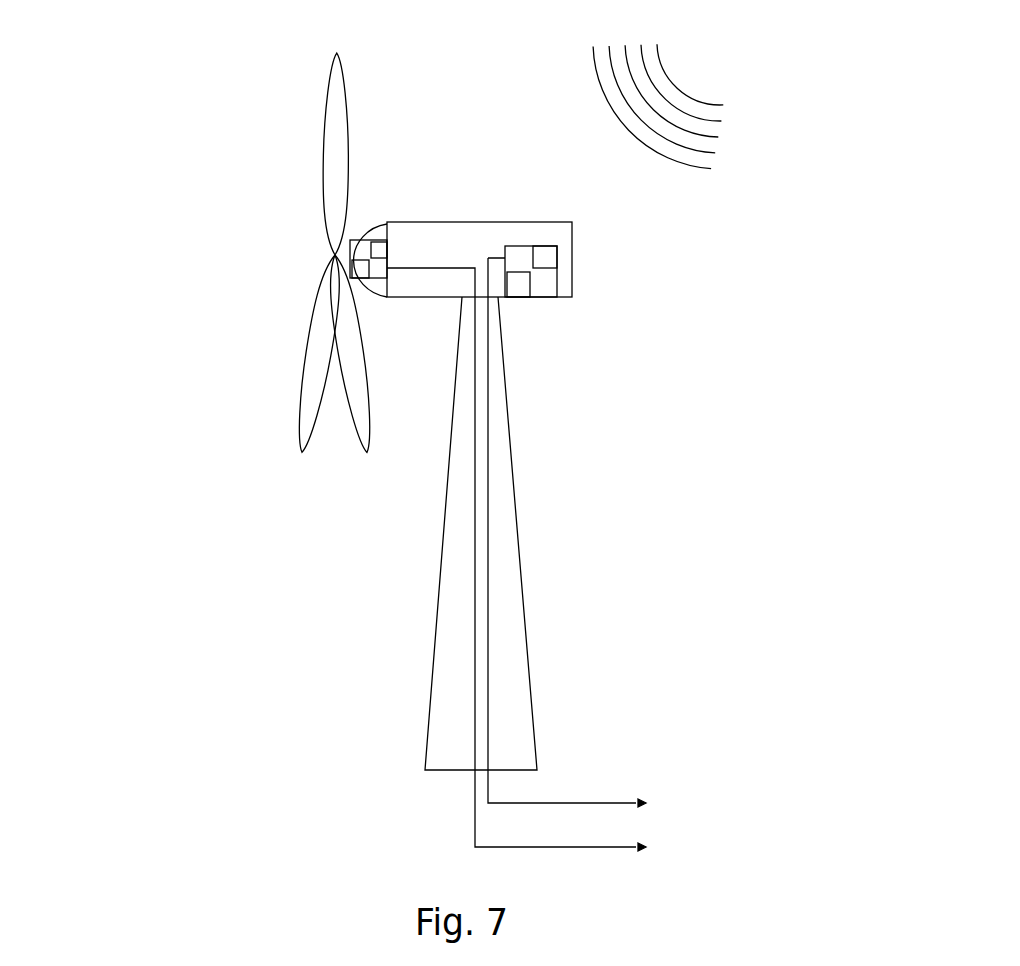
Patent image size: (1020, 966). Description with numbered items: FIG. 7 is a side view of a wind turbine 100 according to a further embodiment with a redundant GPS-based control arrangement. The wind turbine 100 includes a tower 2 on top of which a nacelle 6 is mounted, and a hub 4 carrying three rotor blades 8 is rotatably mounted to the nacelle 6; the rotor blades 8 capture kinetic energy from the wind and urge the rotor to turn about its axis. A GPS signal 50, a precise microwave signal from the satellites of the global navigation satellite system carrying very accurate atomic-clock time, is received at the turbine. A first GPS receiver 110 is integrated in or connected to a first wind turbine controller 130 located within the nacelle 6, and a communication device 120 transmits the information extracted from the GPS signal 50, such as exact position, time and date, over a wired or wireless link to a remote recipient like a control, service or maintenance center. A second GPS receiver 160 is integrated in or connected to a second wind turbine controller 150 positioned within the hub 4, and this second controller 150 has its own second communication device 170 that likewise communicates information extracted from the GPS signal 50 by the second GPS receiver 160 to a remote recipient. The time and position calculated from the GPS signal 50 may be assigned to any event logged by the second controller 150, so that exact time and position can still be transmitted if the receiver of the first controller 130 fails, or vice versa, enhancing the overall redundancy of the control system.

The tower 2 is at (526, 647).
The hub 4 is at (375, 222).
The nacelle 6 is at (572, 259).
The rotor blades 8 is at (326, 143).
The GPS signal 50 is at (685, 88).
The wind turbine 100 is at (93, 302).
The first GPS receiver 110 is at (547, 246).
The communication device 120 is at (515, 298).
The first wind turbine controller 130 is at (557, 288).
The second wind turbine controller 150 is at (335, 255).
The second GPS receiver 160 is at (387, 250).
The second communication device 170 is at (360, 290).